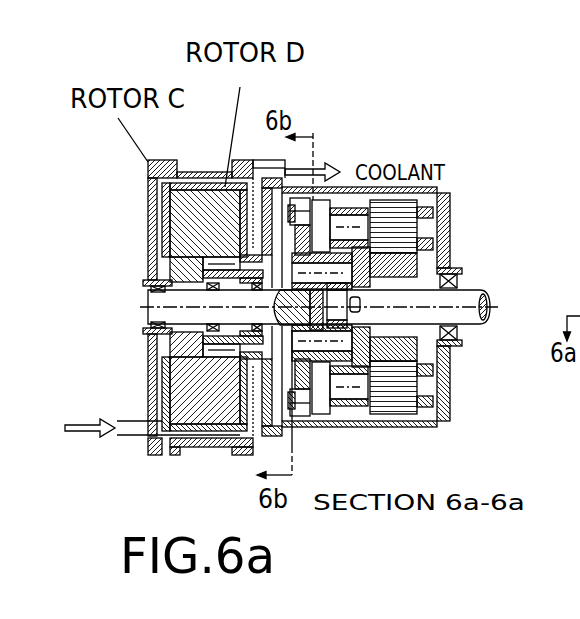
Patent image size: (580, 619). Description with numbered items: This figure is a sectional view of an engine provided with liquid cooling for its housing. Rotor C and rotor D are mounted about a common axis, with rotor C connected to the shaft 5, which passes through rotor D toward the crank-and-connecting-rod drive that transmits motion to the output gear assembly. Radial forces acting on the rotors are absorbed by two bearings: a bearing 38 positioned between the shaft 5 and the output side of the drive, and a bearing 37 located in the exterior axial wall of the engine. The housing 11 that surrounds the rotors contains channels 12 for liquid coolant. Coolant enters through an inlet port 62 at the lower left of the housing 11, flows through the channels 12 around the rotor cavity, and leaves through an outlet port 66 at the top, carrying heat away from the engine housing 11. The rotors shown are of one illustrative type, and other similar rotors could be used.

The shaft 5 is at (147, 248).
The channels 12 is at (190, 160).
The housing 11 is at (152, 460).
The bearing 37 is at (145, 283).
The inlet port 62 is at (117, 430).
The outlet port 66 is at (292, 162).
The bearing 38 is at (337, 333).